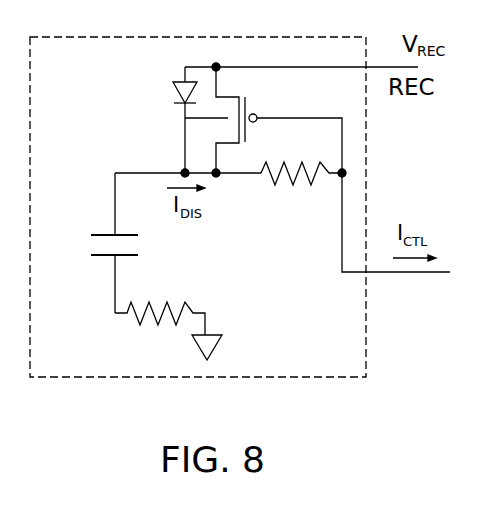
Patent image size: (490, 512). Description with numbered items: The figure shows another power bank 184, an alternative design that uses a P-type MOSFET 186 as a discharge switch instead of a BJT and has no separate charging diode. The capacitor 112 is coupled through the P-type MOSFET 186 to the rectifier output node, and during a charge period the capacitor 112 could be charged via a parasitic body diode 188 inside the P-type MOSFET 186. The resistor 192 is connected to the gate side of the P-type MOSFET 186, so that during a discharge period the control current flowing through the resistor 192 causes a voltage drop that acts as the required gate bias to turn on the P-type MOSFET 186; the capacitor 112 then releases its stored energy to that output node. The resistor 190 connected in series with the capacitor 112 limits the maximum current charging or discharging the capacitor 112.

The power bank 184 is at (92, 82).
The parasitic body diode 188 is at (177, 120).
The P-type MOSFET 186 is at (333, 169).
The resistor 192 is at (301, 185).
The capacitor 112 is at (91, 243).
The resistor 190 is at (160, 306).